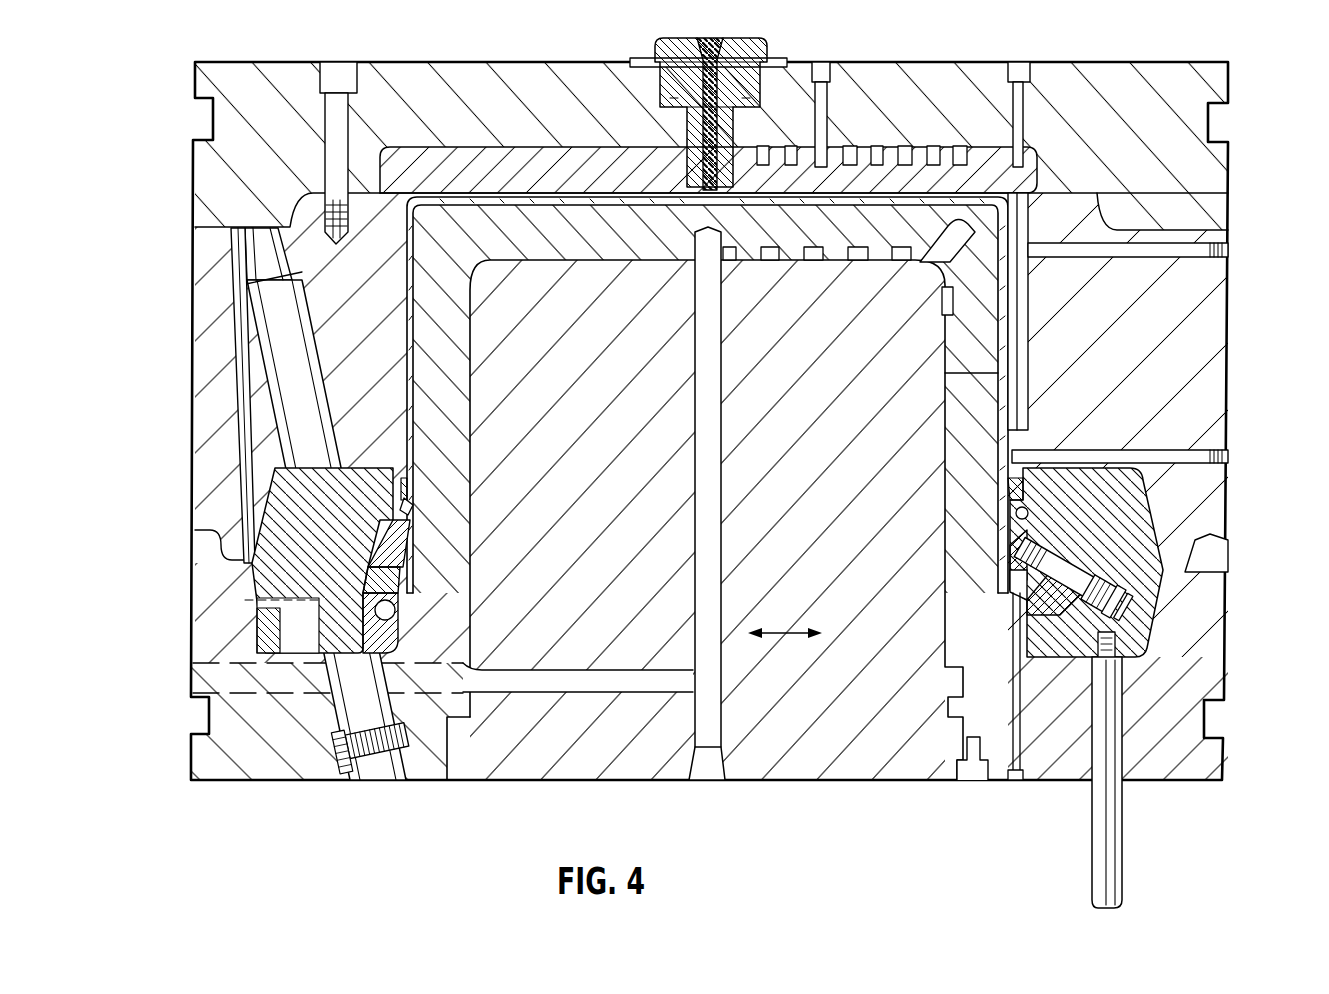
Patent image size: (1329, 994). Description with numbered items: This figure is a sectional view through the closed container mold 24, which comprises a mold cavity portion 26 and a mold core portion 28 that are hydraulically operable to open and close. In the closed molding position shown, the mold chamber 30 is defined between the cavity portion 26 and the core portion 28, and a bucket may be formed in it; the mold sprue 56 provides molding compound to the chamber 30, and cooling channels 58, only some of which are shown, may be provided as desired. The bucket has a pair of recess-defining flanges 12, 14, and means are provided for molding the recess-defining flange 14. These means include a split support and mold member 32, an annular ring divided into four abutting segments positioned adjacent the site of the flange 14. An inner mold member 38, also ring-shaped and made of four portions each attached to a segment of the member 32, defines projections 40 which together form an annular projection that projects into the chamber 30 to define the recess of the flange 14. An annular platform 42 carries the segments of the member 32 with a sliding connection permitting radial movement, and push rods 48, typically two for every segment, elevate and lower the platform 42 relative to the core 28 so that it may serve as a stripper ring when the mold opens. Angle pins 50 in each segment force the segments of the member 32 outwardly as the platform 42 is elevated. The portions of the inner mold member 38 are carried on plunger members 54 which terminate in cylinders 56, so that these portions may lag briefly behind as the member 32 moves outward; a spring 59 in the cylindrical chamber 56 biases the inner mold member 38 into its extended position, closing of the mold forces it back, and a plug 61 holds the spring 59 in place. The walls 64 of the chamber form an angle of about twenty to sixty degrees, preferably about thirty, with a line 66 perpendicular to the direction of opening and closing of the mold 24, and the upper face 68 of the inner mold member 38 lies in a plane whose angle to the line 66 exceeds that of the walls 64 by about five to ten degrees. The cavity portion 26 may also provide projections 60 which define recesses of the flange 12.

The recess-defining flange 12 is at (412, 510).
The recess-defining flange 14 is at (398, 602).
The container mold 24 is at (1240, 185).
The mold cavity portion 26 is at (910, 110).
The mold core portion 28 is at (822, 416).
The mold chamber 30 is at (415, 330).
The split support and mold member 32 is at (275, 527).
The inner mold member 38 is at (408, 547).
The projections 40 is at (403, 568).
The annular platform 42 is at (388, 633).
The push rods 48 is at (1122, 838).
The angle pins 50 is at (303, 372).
The plunger members 54 is at (1068, 555).
The mold sprue 56 is at (770, 73).
The cooling channels 58 is at (965, 155).
The spring 59 is at (1120, 595).
The projections 60 is at (432, 470).
The plug 61 is at (1128, 608).
The walls 64 is at (1102, 578).
The perpendicular line 66 is at (783, 632).
The upper face 68 is at (1027, 517).